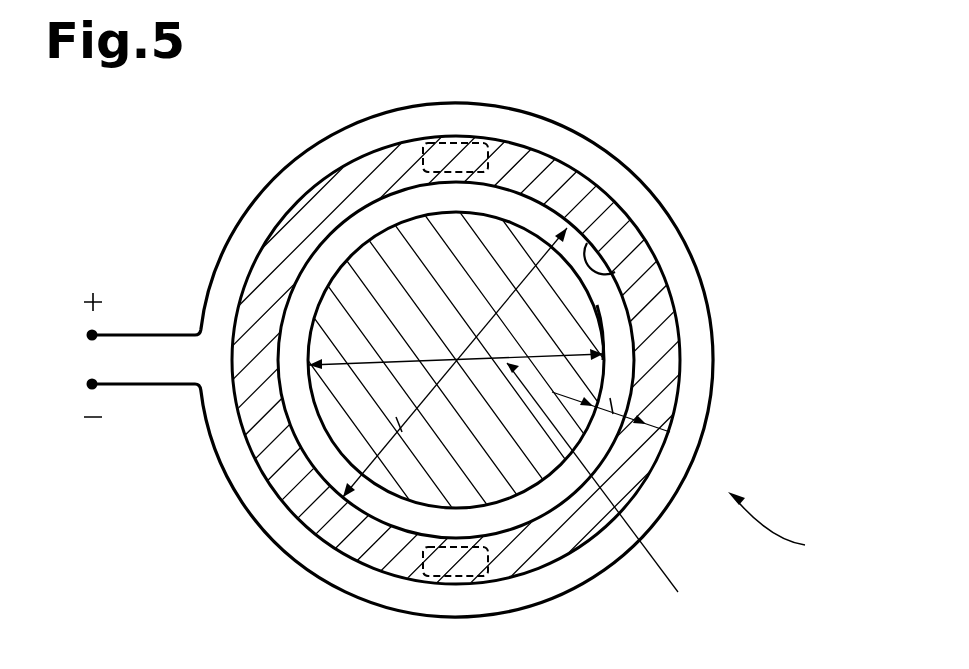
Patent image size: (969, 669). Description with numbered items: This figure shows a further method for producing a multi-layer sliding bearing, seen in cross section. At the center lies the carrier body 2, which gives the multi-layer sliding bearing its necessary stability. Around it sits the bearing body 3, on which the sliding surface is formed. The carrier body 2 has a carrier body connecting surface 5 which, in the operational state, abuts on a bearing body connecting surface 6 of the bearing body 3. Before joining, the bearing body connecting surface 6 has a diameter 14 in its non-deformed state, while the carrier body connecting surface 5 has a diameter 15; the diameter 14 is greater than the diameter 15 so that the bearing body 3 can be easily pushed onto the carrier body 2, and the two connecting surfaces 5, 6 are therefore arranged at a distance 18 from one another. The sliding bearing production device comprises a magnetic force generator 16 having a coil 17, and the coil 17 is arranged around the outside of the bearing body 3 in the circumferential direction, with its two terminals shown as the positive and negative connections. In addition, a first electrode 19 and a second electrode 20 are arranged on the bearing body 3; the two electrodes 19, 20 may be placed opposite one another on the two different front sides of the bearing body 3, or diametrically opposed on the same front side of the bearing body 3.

The carrier body 2 is at (382, 258).
The bearing body 3 is at (532, 172).
The carrier body connecting surface 5 is at (597, 305).
The bearing body connecting surface 6 is at (614, 272).
The diameter 14 is at (400, 428).
The diameter 15 is at (605, 490).
The magnetic force generator 16 is at (780, 528).
The coil 17 is at (233, 230).
The distance 18 is at (612, 404).
The first electrode 19 is at (437, 585).
The second electrode 20 is at (455, 157).